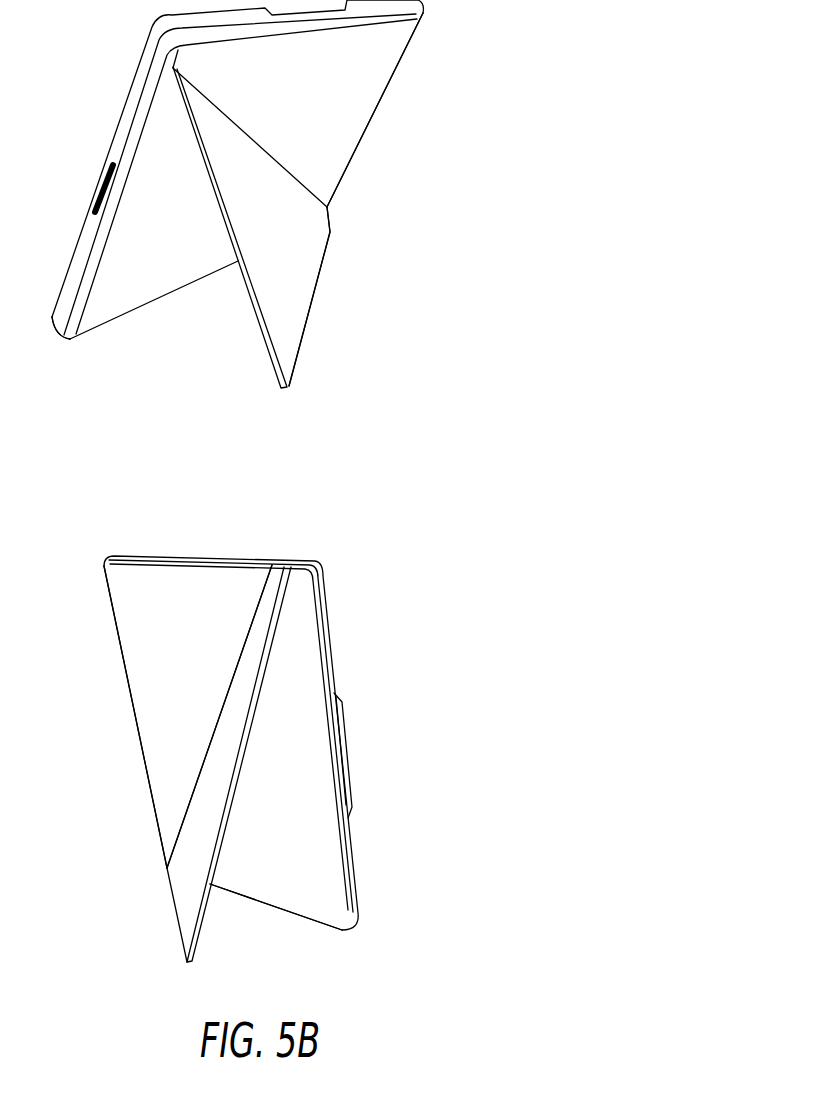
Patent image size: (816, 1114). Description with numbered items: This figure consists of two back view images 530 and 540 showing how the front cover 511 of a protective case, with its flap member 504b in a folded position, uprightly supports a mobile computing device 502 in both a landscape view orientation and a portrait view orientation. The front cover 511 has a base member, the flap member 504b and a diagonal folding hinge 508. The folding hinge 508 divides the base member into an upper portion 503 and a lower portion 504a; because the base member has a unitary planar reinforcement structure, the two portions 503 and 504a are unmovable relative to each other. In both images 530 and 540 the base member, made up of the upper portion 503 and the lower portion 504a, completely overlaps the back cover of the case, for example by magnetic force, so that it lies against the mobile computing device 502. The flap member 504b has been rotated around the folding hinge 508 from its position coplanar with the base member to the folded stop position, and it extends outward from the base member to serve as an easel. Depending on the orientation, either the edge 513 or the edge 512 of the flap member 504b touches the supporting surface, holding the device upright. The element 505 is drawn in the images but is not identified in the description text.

The mobile computing device 502 is at (118, 155).
The upper portion 503 is at (312, 77).
The lower portion 504a is at (188, 258).
The flap member 504b is at (300, 222).
The side edge 505 is at (112, 317).
The diagonal folding hinge 508 is at (283, 168).
The front cover 511 is at (382, 42).
The edge 512 is at (255, 317).
The edge 513 is at (310, 294).
The back view image 530 is at (384, 134).
The back view image 540 is at (368, 687).